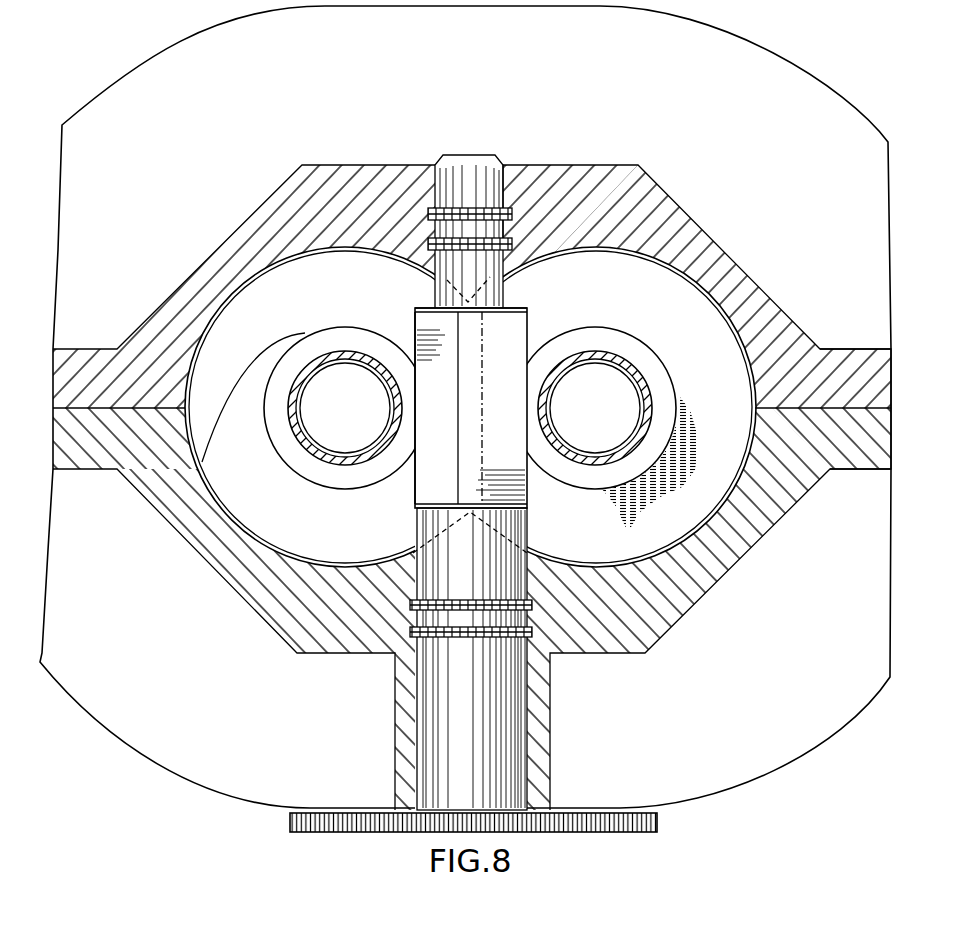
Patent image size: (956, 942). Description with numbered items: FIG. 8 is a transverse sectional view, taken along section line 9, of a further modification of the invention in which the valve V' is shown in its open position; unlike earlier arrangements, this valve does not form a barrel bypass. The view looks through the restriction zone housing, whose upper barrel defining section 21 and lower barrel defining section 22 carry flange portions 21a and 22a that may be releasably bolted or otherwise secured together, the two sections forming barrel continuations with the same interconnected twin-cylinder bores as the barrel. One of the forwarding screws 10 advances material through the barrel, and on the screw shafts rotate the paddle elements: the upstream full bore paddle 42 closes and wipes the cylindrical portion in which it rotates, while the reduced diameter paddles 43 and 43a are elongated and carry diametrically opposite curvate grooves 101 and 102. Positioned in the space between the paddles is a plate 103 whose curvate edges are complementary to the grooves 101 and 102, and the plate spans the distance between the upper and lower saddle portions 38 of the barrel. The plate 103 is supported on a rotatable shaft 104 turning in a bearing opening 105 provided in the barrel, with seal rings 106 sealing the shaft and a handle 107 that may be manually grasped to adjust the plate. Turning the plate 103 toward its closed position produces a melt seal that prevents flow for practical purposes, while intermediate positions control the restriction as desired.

The section line 9- 9 is at (930, 408).
The processing screw paddle member 10 is at (265, 527).
The upper barrel defining section 21 is at (792, 330).
The flange portion 21a is at (847, 357).
The lower barrel defining section 22 is at (778, 508).
The flange portion 22a is at (858, 462).
The frustrum surface 38 is at (507, 281).
The upstream full bore paddle 42 is at (692, 388).
The reduced diameter paddle 43 is at (674, 448).
The reduced diameter paddle 43a is at (272, 450).
The groove 101 is at (331, 351).
The groove 102 is at (638, 372).
The plate 103 is at (422, 482).
The rotatable shaft 104 is at (492, 190).
The bearing opening 105 is at (506, 199).
The seal rings 106 is at (428, 245).
The handle 107 is at (632, 833).
The valve V' is at (509, 291).